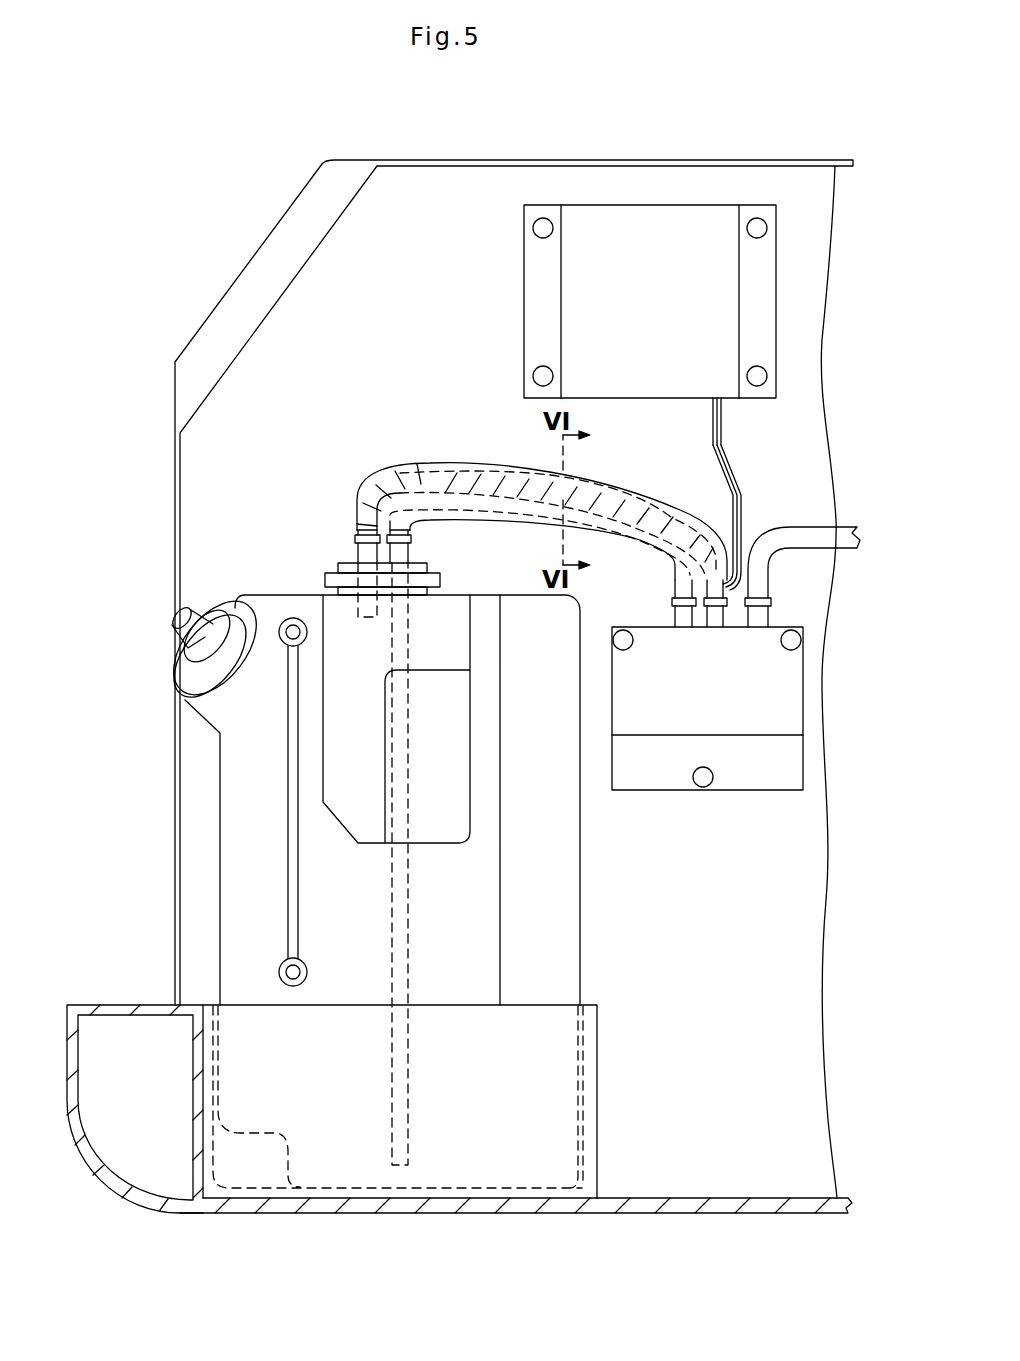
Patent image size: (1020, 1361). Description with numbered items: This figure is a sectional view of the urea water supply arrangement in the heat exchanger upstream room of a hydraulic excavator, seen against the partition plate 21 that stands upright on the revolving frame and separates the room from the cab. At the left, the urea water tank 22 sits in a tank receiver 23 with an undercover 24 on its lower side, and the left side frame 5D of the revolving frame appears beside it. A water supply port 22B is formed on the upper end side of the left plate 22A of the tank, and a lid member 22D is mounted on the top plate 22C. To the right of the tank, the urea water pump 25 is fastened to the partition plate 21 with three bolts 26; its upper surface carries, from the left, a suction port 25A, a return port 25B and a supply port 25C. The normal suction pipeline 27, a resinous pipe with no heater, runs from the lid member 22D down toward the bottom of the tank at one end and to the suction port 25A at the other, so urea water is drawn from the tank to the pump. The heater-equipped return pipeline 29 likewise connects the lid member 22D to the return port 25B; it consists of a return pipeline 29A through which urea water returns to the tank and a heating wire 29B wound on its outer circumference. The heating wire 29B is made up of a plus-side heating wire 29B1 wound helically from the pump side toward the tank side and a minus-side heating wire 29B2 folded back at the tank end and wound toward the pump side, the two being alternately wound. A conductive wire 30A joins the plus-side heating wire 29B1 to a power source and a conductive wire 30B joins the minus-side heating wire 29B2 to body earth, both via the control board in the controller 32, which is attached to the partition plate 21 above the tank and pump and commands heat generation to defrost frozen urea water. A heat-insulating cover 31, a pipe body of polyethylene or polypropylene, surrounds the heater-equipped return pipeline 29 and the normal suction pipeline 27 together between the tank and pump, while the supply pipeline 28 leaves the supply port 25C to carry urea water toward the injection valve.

The left side frame 5D is at (128, 1185).
The partition plate 21 is at (463, 218).
The urea water tank 22 is at (388, 877).
The left plate 22A is at (215, 862).
The water supply port 22B is at (180, 642).
The top plate 22C is at (291, 594).
The lid member 22D is at (347, 565).
The tank receiver 23 is at (350, 1087).
The undercover 24 is at (515, 1205).
The urea water pump 25 is at (745, 703).
The suction port 25A is at (681, 616).
The return port 25B is at (716, 616).
The supply port 25C is at (760, 617).
The bolt 26 is at (622, 632).
The normal suction pipeline 27 is at (470, 512).
The supply pipeline 28 is at (801, 545).
The heater-equipped return pipeline 29 is at (542, 480).
The return pipeline 29A is at (400, 470).
The heating wire 29B is at (651, 505).
The plus-side heating wire 29B1 is at (535, 470).
The minus-side heating wire 29B2 is at (522, 503).
The conductive wire 30A is at (734, 455).
The conductive wire 30B is at (712, 419).
The heat-insulating cover 31 is at (605, 486).
The controller 32 is at (646, 272).